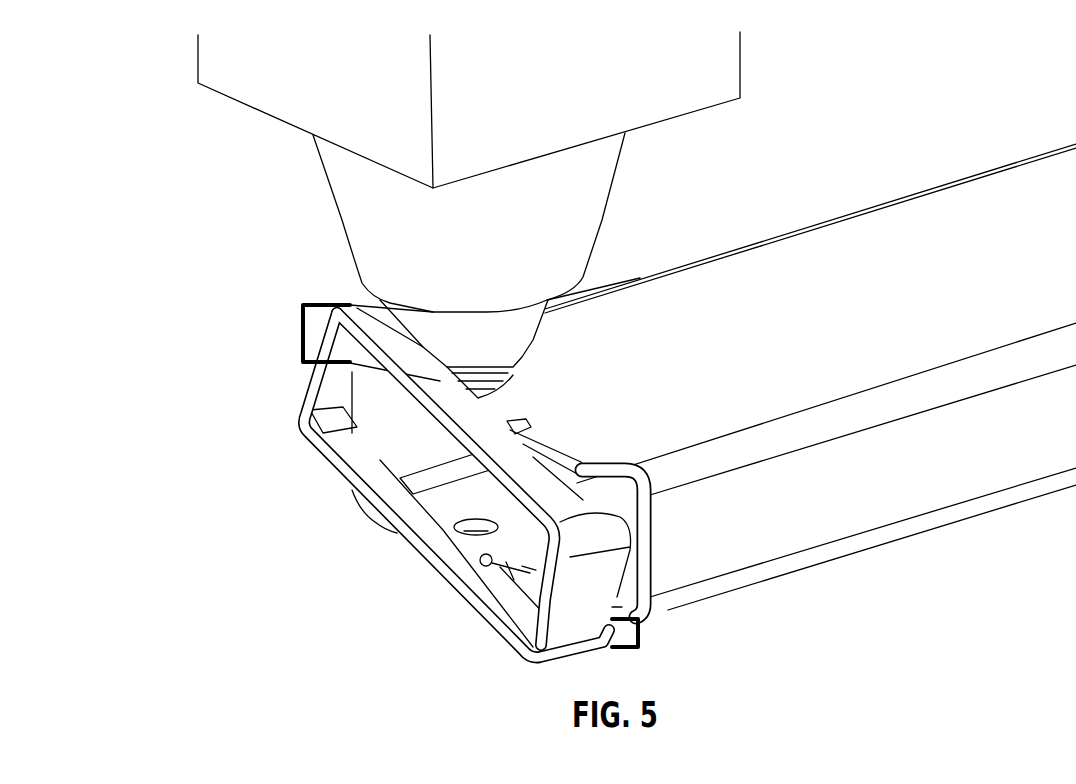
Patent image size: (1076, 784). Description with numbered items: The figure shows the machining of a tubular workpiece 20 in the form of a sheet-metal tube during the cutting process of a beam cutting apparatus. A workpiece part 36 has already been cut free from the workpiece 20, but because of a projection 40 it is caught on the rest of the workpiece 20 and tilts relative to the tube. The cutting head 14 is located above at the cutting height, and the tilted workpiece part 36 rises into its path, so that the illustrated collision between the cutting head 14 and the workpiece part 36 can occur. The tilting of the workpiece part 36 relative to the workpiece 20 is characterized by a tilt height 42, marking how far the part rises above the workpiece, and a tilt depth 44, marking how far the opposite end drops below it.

The cutting head 14 is at (302, 88).
The workpiece 20 is at (777, 277).
The workpiece part 36 is at (306, 389).
The projection 40 is at (512, 424).
The tilt height 42 is at (303, 340).
The tilt depth 44 is at (638, 633).